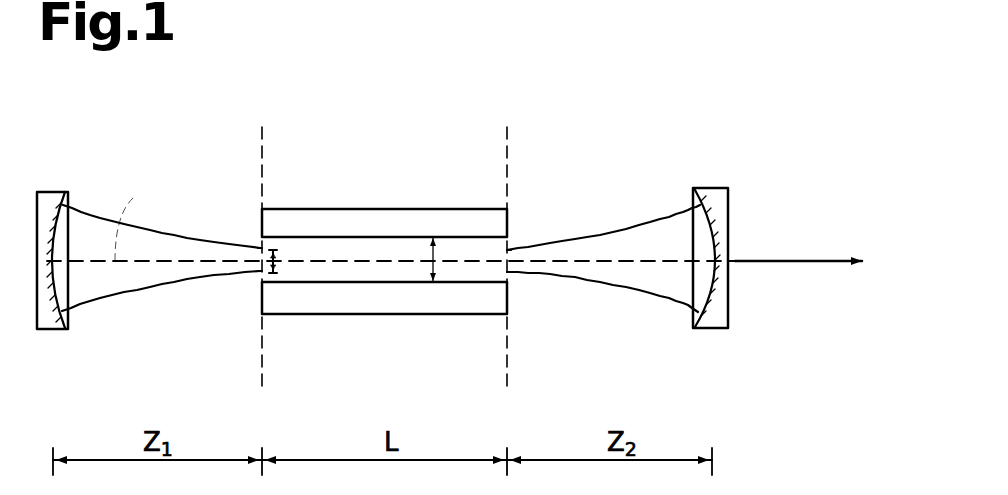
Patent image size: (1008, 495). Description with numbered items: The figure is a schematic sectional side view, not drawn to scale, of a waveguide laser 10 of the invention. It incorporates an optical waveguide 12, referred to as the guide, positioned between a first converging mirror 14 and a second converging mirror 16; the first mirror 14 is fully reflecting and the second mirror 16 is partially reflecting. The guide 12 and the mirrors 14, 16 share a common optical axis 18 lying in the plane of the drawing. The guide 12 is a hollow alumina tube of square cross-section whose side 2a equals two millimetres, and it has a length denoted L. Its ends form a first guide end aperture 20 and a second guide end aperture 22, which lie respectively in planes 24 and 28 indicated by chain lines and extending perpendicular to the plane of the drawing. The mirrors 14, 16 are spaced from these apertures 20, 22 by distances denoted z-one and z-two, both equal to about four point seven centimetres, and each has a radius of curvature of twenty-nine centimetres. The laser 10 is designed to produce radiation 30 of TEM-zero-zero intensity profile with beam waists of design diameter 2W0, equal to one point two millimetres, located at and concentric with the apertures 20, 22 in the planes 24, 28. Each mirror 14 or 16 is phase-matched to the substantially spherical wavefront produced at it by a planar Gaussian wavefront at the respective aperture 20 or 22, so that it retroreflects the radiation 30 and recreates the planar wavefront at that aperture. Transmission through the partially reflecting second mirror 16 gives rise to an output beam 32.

The waveguide laser 10 is at (461, 70).
The optical waveguide 12 is at (385, 204).
The first converging mirror 14 is at (58, 192).
The second converging mirror 16 is at (723, 188).
The optical axis 18 is at (140, 223).
The first guide end aperture 20 is at (252, 238).
The second guide end aperture 22 is at (513, 240).
The plane 24 is at (262, 130).
The plane 28 is at (507, 130).
The radiation 30 is at (165, 283).
The output beam 32 is at (803, 258).
The design beam waist diameter 2W0 is at (286, 268).
The side of square cross-section 2a is at (424, 266).